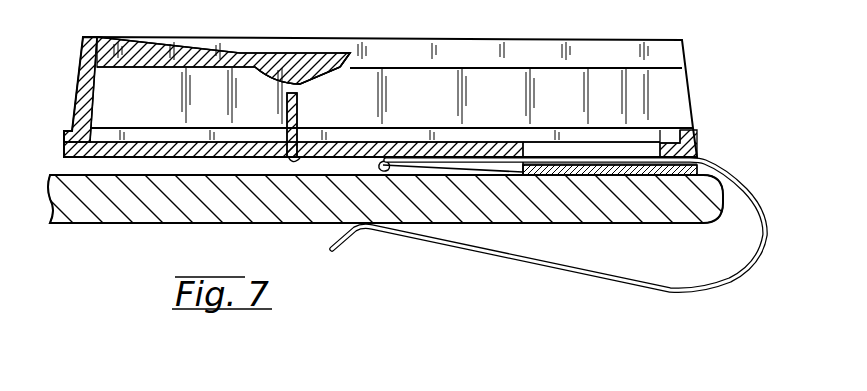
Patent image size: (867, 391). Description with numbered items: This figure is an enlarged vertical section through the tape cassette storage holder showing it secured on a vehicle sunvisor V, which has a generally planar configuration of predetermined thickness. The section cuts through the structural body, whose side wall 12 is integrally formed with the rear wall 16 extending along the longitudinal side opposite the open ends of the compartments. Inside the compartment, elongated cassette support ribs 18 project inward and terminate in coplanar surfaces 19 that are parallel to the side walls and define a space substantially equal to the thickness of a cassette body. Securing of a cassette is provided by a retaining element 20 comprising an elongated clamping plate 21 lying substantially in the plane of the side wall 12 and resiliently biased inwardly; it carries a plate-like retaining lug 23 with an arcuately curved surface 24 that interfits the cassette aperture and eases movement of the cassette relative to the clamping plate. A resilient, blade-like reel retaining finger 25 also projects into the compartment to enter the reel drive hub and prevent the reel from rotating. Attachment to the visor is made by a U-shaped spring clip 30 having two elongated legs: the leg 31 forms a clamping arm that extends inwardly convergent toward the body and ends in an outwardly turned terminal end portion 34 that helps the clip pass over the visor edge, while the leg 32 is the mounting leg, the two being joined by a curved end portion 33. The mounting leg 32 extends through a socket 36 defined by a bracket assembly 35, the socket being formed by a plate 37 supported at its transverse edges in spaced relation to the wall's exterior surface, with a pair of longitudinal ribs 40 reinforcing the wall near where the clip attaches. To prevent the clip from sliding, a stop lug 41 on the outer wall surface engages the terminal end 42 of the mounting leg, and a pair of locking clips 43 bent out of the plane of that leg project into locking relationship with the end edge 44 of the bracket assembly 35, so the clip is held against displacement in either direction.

The side wall 12 is at (577, 39).
The rear wall 16 is at (83, 72).
The cassette support ribs 18 is at (627, 63).
The surfaces 19 is at (503, 69).
The retaining element 20 is at (302, 51).
The clamping plate 21 is at (194, 51).
The retaining lug 23 is at (312, 76).
The arcuately curved surface 24 is at (270, 80).
The reel retaining finger 25 is at (300, 108).
The spring clip 30 is at (726, 280).
The leg 31 is at (545, 258).
The leg 32 is at (702, 163).
The curved end portion 33 is at (758, 206).
The terminal end portion 34 is at (348, 238).
The bracket assembly 35 is at (657, 178).
The socket 36 is at (598, 168).
The plate 37 is at (603, 160).
The ribs 40 is at (684, 125).
The stop lug 41 is at (384, 161).
The terminal end 42 is at (393, 158).
The locking clips 43 is at (498, 160).
The end edge 44 is at (519, 172).
The sunvisor V is at (300, 226).